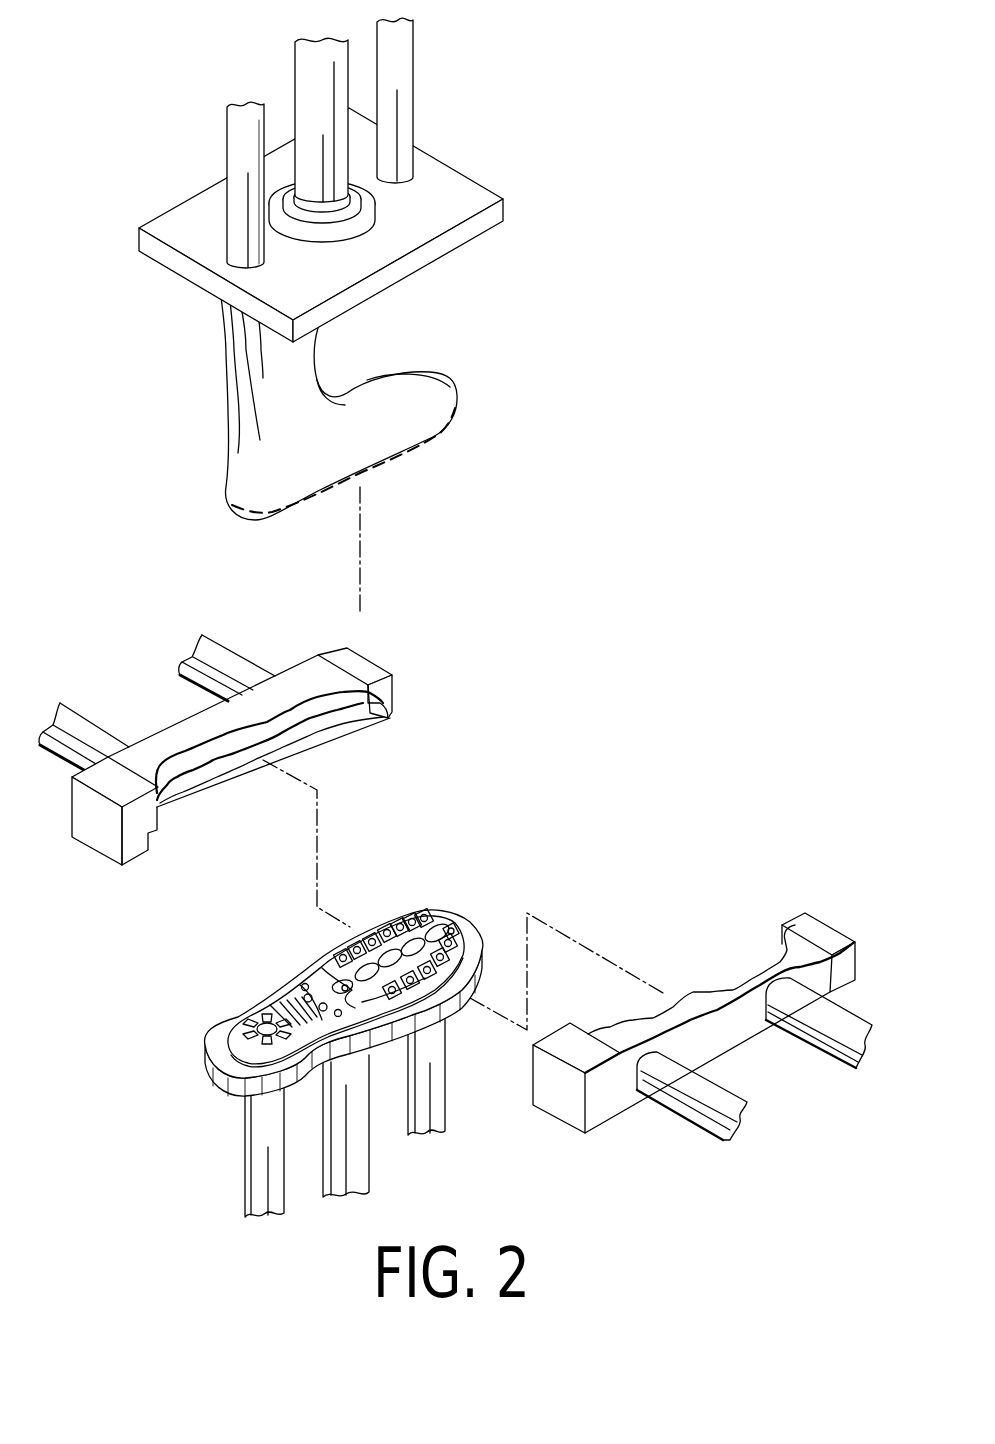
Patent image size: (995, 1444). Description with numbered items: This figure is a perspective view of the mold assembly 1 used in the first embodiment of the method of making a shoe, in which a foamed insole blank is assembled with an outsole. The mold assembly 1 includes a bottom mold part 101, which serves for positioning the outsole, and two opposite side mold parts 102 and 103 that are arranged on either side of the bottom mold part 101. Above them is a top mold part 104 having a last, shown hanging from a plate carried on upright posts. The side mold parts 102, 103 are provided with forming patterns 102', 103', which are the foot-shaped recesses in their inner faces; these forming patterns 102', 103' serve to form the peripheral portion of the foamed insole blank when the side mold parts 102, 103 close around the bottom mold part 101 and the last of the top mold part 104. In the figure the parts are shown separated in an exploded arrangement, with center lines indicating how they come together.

The mold assembly 1 is at (204, 942).
The bottom mold part 101 is at (237, 1052).
The side mold part 102 is at (215, 710).
The forming pattern 102' is at (310, 745).
The side mold part 103 is at (715, 974).
The forming pattern 103' is at (719, 968).
The top mold part 104 is at (428, 415).